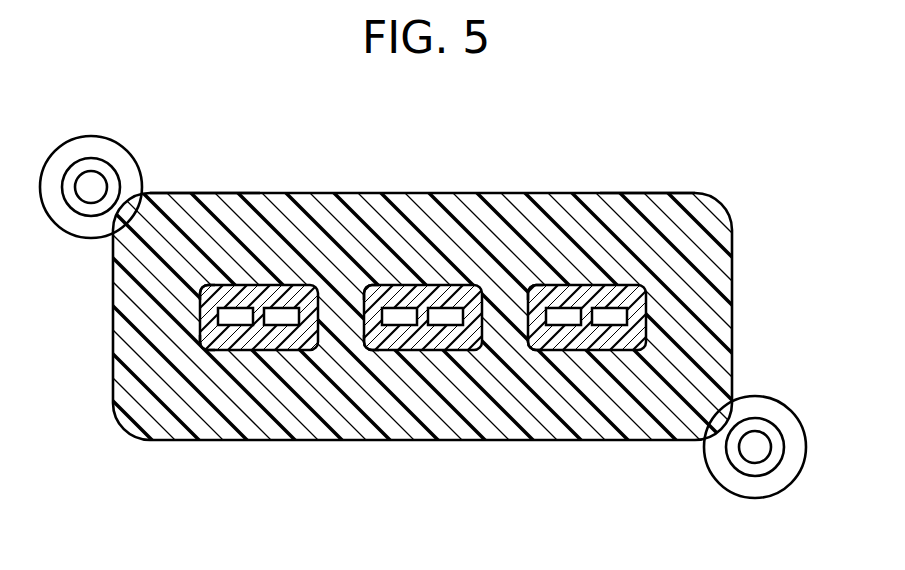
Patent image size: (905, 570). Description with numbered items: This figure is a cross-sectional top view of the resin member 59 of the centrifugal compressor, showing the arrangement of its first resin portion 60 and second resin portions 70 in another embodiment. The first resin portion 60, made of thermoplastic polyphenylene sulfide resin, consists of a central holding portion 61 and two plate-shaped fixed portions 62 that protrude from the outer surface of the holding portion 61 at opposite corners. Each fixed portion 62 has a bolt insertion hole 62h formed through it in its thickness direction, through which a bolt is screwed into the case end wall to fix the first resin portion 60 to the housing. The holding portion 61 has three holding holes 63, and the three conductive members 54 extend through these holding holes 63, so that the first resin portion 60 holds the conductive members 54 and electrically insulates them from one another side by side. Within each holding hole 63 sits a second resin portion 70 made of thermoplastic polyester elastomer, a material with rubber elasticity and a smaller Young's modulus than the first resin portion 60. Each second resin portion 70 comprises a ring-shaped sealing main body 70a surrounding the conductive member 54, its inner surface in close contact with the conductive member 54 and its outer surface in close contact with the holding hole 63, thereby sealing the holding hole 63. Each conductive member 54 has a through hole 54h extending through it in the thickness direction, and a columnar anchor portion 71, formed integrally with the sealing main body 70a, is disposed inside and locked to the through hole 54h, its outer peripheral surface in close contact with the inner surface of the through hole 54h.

The conductive member 54 is at (238, 312).
The through hole 54h is at (258, 312).
The resin member 59 is at (722, 202).
The first resin portion 60 is at (682, 193).
The holding portion 61 is at (182, 193).
The fixed portion 62 is at (58, 155).
The bolt insertion hole 62h is at (85, 178).
The holding hole 63 is at (207, 343).
The second resin portion 70 is at (302, 286).
The sealing main body 70a is at (210, 287).
The anchor portion 71 is at (258, 335).